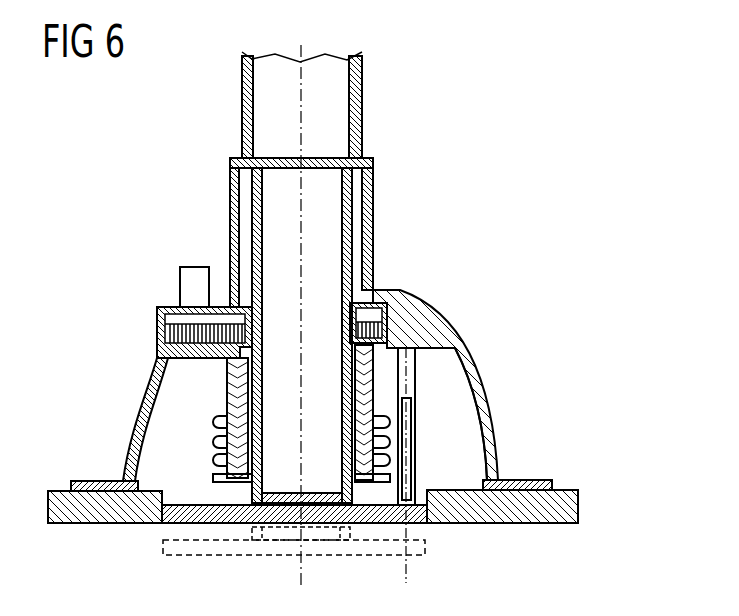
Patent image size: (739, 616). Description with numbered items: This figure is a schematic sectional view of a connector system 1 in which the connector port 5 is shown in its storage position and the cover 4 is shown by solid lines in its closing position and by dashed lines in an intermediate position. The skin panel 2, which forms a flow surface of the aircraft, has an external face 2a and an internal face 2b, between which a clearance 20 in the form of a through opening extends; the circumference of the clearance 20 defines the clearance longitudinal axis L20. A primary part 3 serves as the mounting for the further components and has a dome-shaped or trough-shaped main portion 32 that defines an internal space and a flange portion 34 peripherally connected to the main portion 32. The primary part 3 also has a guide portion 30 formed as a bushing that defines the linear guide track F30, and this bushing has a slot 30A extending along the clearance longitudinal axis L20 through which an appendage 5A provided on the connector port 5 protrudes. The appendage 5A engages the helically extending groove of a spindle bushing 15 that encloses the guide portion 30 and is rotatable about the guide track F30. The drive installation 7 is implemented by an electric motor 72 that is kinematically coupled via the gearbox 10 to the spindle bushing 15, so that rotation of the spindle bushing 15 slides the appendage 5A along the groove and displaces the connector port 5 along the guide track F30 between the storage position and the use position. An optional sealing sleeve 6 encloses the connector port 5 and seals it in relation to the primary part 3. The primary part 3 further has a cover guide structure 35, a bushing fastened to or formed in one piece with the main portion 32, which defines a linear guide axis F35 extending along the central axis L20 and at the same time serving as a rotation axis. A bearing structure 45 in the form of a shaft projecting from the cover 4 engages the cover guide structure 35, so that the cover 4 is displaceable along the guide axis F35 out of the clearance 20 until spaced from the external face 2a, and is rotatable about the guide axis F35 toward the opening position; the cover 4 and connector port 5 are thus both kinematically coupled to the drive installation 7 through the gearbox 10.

The connector system 1 is at (334, 333).
The skin panel 2 is at (337, 528).
The external face 2a is at (328, 543).
The internal face 2b is at (562, 490).
The primary part 3 is at (425, 318).
The cover 4 is at (215, 520).
The connector port 5 is at (352, 236).
The appendage 5A is at (250, 401).
The sealing sleeve 6 is at (294, 567).
The drive installation 7 is at (163, 257).
The gearbox 10 is at (143, 323).
The spindle bushing 15 is at (168, 420).
The clearance 20 is at (168, 522).
The guide portion 30 is at (355, 386).
The slot 30A is at (248, 377).
The main portion 32 is at (490, 410).
The flange portion 34 is at (83, 481).
The cover guide structure 35 is at (408, 369).
The bearing structure 45 is at (408, 450).
The electric motor 72 is at (195, 278).
The clearance longitudinal axis L20 is at (300, 90).
The guide track F30 is at (215, 316).
The guide axis F35 is at (453, 468).